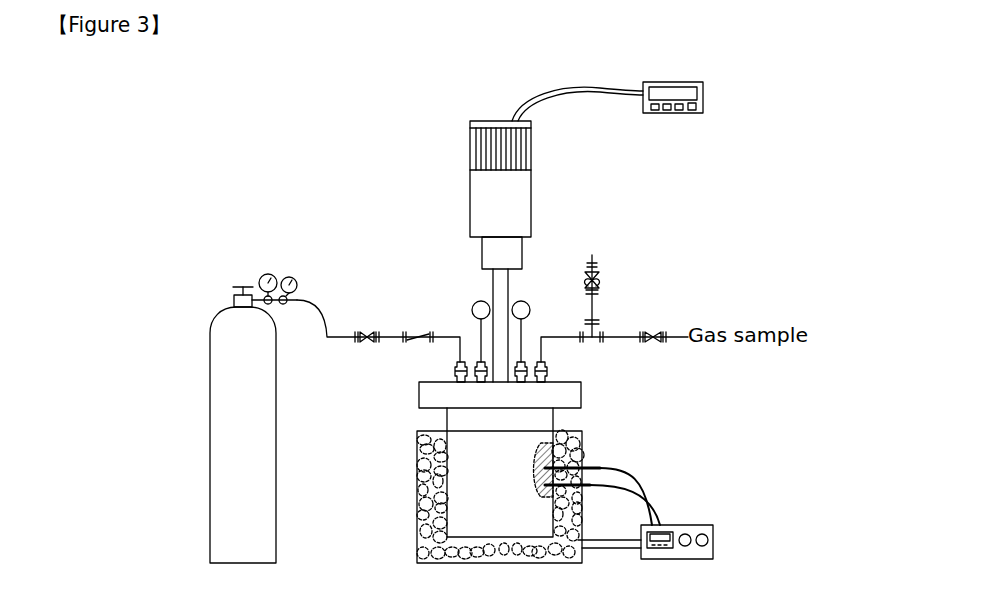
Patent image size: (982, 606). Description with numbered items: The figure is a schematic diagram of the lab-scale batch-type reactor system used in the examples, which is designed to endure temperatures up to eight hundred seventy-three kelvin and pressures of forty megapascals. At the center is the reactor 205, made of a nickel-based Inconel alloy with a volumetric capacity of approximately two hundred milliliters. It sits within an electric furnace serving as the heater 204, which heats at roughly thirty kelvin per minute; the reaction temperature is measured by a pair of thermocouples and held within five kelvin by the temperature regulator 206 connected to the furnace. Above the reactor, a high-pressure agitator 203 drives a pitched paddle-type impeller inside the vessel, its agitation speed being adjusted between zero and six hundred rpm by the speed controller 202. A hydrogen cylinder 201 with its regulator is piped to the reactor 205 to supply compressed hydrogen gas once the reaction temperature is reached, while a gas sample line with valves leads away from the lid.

The hydrogen cylinder 201 is at (210, 415).
The speed controller 202 is at (677, 82).
The high-pressure agitator 203 is at (531, 200).
The heater 204 is at (417, 470).
The reactor 205 is at (419, 393).
The temperature regulator 206 is at (697, 525).